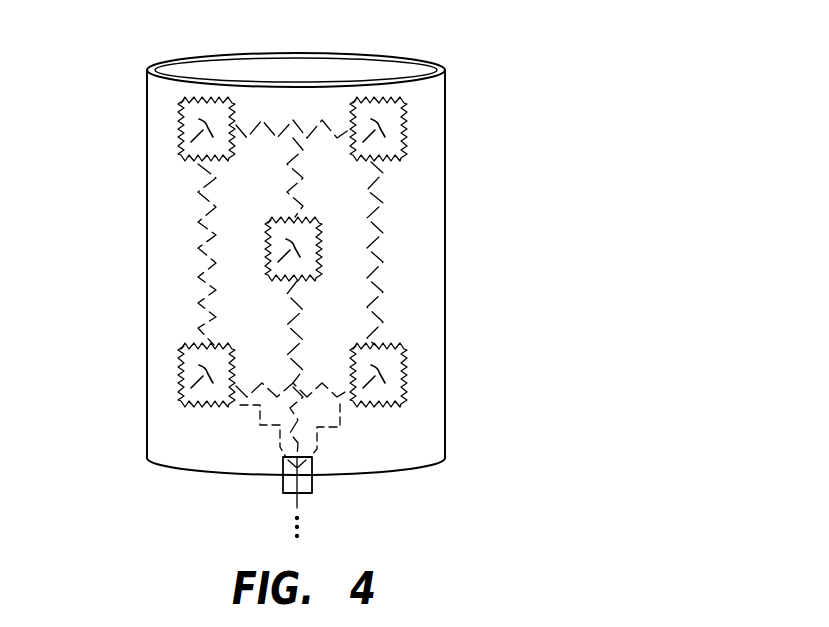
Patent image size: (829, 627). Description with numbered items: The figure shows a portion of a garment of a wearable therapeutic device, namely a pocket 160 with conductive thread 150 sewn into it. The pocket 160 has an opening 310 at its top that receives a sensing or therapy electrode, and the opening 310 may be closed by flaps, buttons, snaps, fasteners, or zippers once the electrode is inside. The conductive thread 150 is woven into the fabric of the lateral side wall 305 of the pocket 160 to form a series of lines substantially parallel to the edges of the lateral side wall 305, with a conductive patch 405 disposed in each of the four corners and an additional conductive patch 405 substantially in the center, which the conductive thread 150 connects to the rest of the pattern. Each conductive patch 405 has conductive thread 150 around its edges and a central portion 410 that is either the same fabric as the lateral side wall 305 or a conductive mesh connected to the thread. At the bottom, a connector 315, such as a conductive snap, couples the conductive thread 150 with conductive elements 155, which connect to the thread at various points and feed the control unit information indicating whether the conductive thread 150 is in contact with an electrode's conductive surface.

The conductive thread 150 is at (382, 290).
The conductive element 155 is at (242, 405).
The pocket 160 is at (144, 243).
The lateral side wall 305 is at (165, 139).
The opening 310 is at (360, 77).
The connector 315 is at (283, 493).
The conductive patch 405 is at (180, 100).
The central portion 410 is at (179, 160).